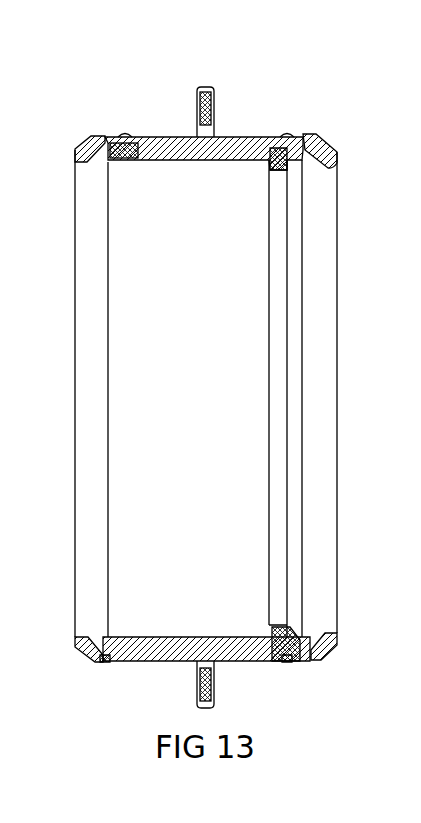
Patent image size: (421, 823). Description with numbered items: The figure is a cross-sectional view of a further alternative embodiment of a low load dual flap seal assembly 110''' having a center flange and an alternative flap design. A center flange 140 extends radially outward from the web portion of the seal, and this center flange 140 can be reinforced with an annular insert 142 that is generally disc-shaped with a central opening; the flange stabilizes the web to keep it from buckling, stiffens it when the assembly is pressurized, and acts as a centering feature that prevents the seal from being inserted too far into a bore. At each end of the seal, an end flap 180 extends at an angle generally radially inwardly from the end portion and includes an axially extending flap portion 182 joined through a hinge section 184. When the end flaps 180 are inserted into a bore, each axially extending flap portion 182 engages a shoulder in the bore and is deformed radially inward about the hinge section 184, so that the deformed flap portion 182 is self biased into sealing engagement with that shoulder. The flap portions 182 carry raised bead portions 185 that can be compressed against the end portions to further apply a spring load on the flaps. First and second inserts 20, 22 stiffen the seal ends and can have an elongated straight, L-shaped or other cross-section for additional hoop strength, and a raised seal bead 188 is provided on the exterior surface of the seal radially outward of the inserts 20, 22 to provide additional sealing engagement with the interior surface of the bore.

The dual flap seal assembly 110''' is at (120, 49).
The center flange 140 is at (220, 91).
The annular insert 142 is at (214, 706).
The end flap 180 is at (82, 126).
The axially extending flap portion 182 is at (75, 148).
The hinge section 184 is at (105, 136).
The raised bead portion 185 is at (80, 640).
The first insert 20 is at (100, 660).
The second insert 22 is at (290, 656).
The raised seal bead 188 is at (106, 662).